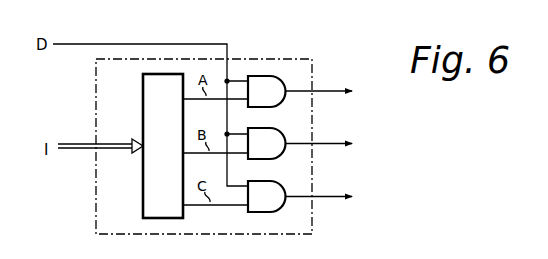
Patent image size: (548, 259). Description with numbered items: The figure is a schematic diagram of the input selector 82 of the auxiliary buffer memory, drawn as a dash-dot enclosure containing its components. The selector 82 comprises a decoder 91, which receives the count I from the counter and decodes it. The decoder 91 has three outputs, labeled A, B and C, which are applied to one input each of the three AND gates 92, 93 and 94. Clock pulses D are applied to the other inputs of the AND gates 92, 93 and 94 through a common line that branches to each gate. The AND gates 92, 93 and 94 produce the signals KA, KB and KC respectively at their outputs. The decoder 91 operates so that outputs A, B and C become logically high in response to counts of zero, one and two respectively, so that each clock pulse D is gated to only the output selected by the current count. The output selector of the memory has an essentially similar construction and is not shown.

The input selector 82 is at (313, 59).
The decoder 91 is at (172, 74).
The AND gate 92 is at (279, 83).
The AND gate 93 is at (278, 133).
The AND gate 94 is at (278, 186).